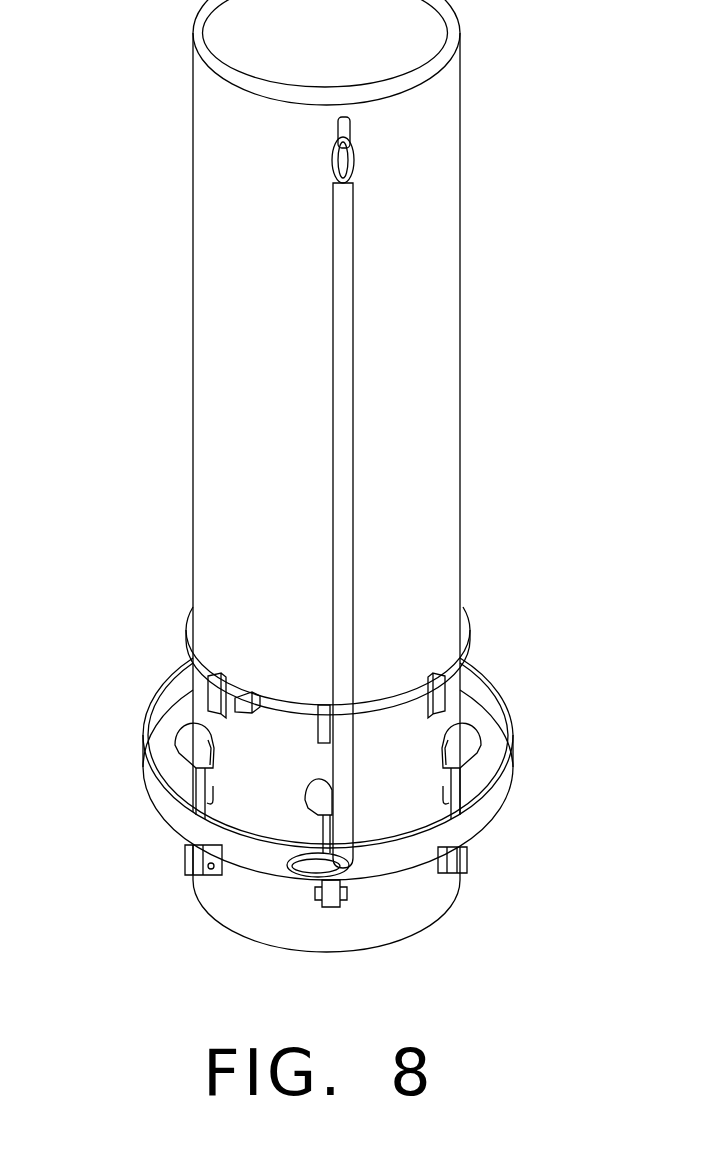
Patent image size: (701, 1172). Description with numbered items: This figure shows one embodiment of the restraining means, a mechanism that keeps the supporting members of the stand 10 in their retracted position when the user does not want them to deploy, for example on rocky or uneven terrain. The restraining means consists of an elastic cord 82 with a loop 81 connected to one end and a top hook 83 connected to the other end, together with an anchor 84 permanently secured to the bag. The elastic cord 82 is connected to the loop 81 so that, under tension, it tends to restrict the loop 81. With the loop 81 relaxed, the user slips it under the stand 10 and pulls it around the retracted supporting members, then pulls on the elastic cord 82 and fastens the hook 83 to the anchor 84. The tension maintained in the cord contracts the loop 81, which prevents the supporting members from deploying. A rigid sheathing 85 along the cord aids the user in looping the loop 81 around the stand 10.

The stand 10 is at (284, 789).
The loop 81 is at (160, 799).
The elastic cord 82 is at (292, 877).
The top hook 83 is at (353, 150).
The anchor 84 is at (337, 126).
The rigid sheathing 85 is at (336, 352).